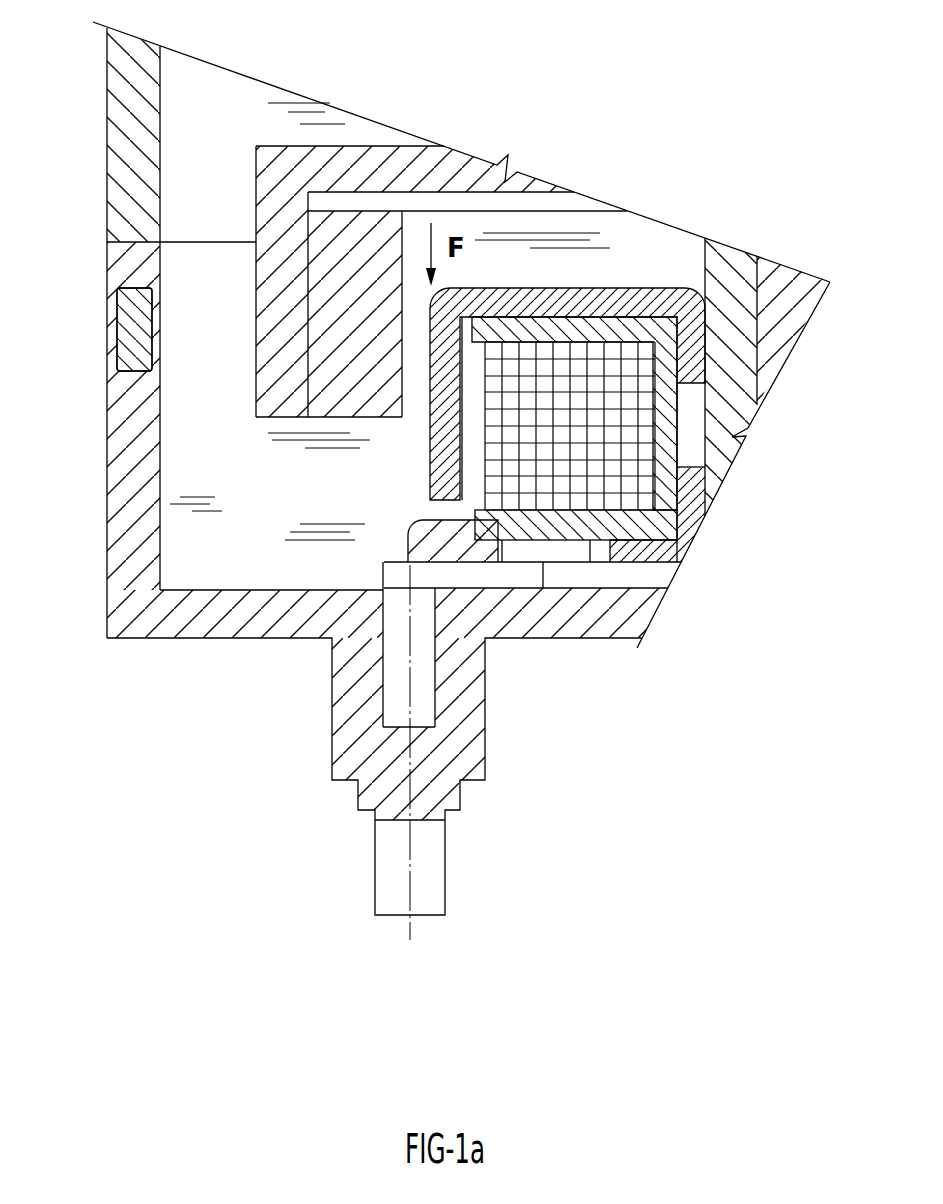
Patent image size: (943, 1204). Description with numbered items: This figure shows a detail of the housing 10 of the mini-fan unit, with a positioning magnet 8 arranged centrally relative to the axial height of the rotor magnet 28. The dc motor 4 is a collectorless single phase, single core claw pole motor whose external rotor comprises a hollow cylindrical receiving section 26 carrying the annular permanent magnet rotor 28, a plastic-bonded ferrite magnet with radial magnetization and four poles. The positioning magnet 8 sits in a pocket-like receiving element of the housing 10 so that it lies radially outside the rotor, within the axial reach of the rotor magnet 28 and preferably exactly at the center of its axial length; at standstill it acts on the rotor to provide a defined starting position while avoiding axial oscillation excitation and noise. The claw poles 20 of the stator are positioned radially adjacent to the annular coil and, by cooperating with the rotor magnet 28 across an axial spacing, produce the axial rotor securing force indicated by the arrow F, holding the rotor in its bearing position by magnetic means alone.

The dc motor 4 is at (298, 517).
The positioning magnet 8 is at (128, 311).
The housing 10 is at (117, 418).
The claw pole 20 is at (452, 486).
The receiving section 26 is at (280, 276).
The rotor magnet 28 is at (325, 380).